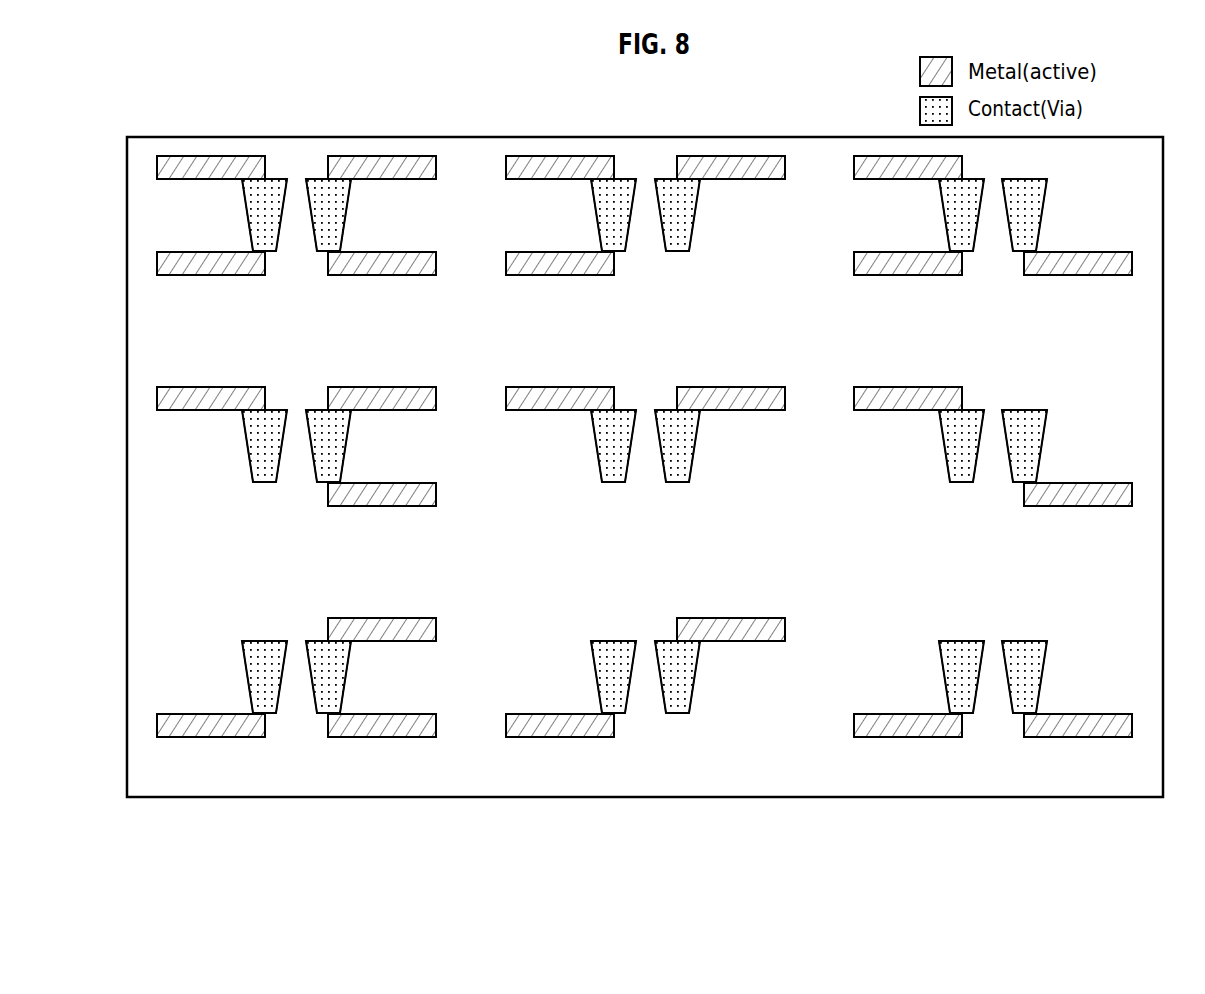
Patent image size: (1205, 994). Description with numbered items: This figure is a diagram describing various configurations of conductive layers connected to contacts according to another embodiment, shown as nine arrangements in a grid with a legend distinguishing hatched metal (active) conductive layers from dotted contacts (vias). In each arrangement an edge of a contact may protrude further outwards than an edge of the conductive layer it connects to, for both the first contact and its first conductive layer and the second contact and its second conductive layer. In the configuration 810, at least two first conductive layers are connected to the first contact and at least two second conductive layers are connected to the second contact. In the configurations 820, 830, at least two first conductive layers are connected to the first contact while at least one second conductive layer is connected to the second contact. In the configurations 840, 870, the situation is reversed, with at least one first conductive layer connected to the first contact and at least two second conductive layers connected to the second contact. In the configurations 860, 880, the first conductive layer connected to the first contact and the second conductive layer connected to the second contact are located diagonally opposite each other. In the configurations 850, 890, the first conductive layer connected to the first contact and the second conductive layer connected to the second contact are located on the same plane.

The configuration 810 is at (296, 236).
The configuration 820 is at (645, 236).
The configuration 830 is at (993, 236).
The configuration 840 is at (296, 467).
The configuration 850 is at (645, 467).
The configuration 860 is at (993, 467).
The configuration 870 is at (296, 698).
The configuration 880 is at (645, 698).
The configuration 890 is at (993, 710).